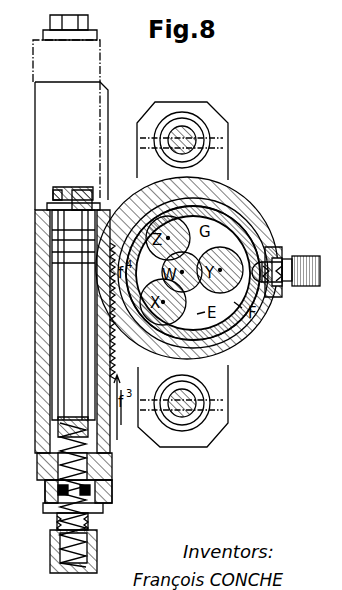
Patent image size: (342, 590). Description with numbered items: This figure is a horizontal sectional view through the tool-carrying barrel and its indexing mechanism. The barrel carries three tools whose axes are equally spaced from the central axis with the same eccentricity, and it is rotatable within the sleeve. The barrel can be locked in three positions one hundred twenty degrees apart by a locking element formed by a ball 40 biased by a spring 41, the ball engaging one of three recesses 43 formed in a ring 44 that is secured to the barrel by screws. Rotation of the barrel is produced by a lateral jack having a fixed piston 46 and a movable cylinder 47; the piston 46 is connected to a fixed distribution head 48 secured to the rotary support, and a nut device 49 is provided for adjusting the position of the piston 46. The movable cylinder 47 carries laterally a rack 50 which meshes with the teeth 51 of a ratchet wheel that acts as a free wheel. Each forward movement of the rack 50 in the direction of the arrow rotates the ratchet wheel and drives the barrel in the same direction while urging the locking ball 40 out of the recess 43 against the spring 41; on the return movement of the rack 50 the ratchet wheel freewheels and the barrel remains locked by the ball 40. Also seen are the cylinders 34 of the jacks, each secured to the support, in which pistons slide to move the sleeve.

The cylinder 34 is at (192, 140).
The ball 40 is at (272, 286).
The spring 41 is at (298, 262).
The recess 43 is at (265, 250).
The ring 44 is at (245, 255).
The fixed piston 46 is at (70, 298).
The movable cylinder 47 is at (42, 263).
The fixed distribution head 48 is at (110, 468).
The nut device 49 is at (95, 552).
The rack 50 is at (187, 278).
The teeth 51 is at (110, 280).